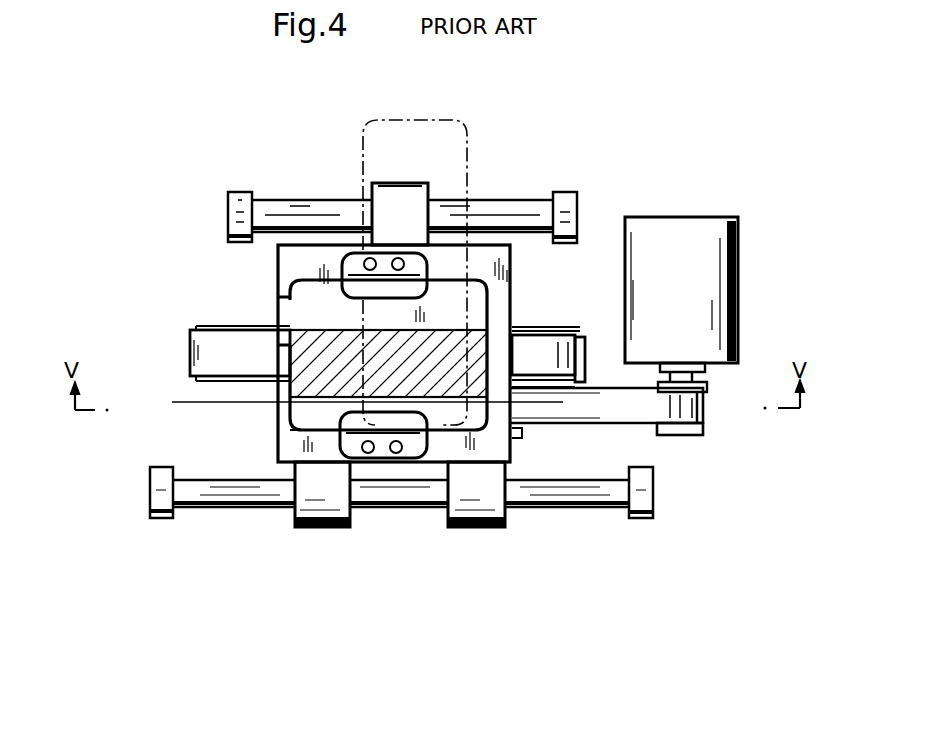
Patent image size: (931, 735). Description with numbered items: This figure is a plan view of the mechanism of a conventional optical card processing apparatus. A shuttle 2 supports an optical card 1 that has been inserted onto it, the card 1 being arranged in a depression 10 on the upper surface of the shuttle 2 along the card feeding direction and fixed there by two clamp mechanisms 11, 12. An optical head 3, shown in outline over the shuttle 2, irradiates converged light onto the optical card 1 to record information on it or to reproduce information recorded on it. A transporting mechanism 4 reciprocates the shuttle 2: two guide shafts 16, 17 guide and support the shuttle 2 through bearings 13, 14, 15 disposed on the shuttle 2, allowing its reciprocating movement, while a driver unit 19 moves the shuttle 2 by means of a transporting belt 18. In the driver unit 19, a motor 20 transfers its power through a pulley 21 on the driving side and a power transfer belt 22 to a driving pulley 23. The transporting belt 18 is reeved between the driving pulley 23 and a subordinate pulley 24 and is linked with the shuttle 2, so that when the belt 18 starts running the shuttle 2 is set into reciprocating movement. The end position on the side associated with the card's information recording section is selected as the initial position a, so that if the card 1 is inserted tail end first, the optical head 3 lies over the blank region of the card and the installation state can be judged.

The optical card 1 is at (296, 302).
The shuttle 2 is at (510, 291).
The optical head 3 is at (469, 153).
The transporting mechanism 4 is at (550, 172).
The depression 10 is at (305, 427).
The clamp mechanism 11 is at (382, 451).
The clamp mechanism 12 is at (342, 265).
The bearing 13 is at (318, 528).
The bearing 14 is at (478, 528).
The bearing 15 is at (393, 183).
The guide shaft 16 is at (212, 505).
The guide shaft 17 is at (276, 200).
The transporting belt 18 is at (190, 346).
The driver unit 19 is at (638, 437).
The motor 20 is at (740, 292).
The pulley 21 is at (690, 434).
The power transfer belt 22 is at (610, 410).
The driving pulley 23 is at (558, 330).
The pulley 24 is at (236, 325).
The initial position a is at (197, 402).